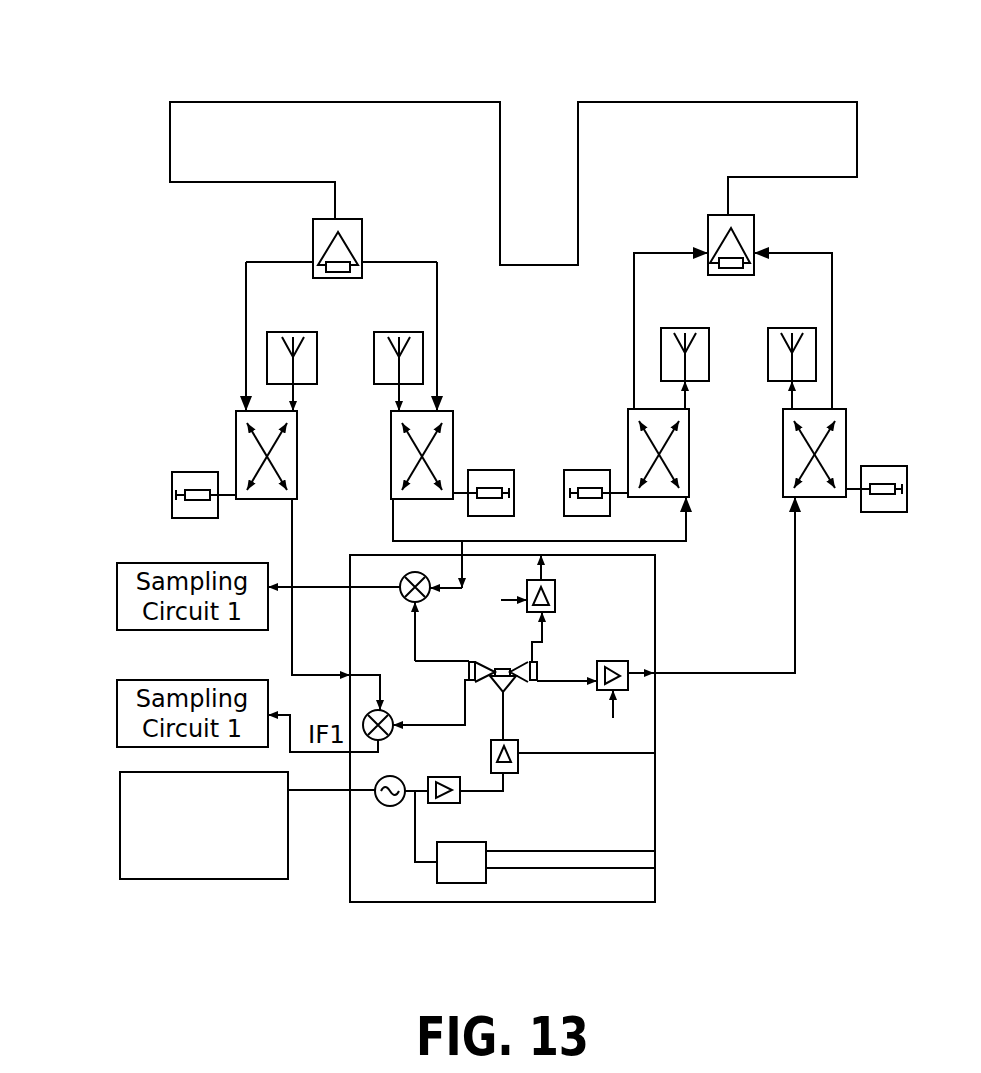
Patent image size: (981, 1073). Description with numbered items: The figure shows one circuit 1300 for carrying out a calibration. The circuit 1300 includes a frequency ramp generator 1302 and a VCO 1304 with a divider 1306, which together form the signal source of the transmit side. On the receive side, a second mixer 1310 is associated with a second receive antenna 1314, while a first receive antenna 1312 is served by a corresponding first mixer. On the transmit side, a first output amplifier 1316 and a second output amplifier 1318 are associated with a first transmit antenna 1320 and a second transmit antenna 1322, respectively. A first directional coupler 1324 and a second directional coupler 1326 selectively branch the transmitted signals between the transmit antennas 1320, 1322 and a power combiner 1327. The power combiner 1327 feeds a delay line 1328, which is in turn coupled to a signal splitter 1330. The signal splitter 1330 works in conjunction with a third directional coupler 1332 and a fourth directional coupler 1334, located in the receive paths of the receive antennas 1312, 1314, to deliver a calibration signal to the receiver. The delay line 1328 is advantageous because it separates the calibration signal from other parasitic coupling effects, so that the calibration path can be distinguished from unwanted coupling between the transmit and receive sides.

The circuit 1300 is at (140, 62).
The frequency ramp generator 1302 is at (192, 879).
The VCO 1304 is at (399, 781).
The divider 1306 is at (463, 842).
The second mixer 1310 is at (404, 574).
The first receive antenna 1312 is at (267, 355).
The second receive antenna 1314 is at (423, 355).
The first output amplifier 1316 is at (555, 597).
The second output amplifier 1318 is at (615, 661).
The first transmit antenna 1320 is at (661, 352).
The second transmit antenna 1322 is at (816, 352).
The first directional coupler 1324 is at (628, 433).
The second directional coupler 1326 is at (846, 437).
The power combiner 1327 is at (757, 225).
The delay line 1328 is at (662, 99).
The signal splitter 1330 is at (350, 219).
The third directional coupler 1332 is at (236, 438).
The fourth directional coupler 1334 is at (453, 443).